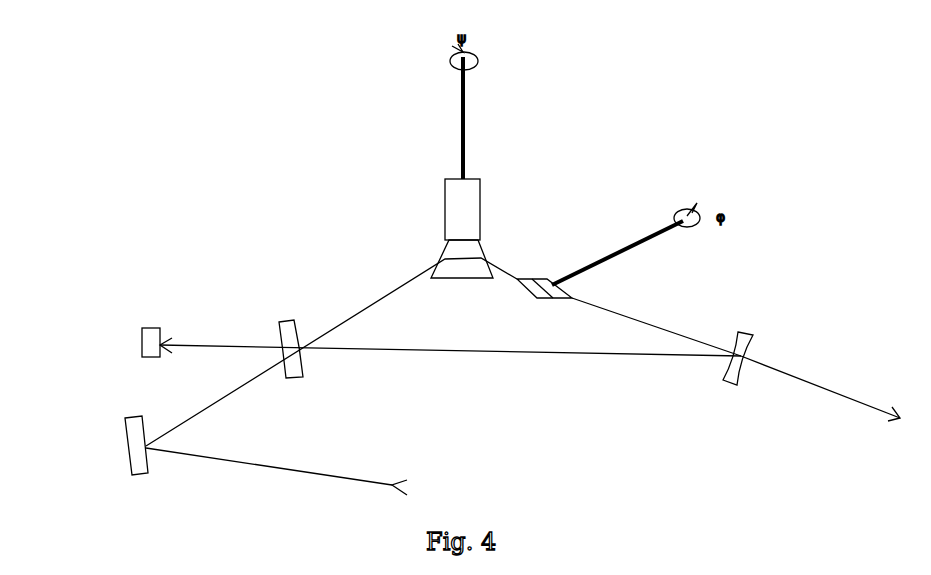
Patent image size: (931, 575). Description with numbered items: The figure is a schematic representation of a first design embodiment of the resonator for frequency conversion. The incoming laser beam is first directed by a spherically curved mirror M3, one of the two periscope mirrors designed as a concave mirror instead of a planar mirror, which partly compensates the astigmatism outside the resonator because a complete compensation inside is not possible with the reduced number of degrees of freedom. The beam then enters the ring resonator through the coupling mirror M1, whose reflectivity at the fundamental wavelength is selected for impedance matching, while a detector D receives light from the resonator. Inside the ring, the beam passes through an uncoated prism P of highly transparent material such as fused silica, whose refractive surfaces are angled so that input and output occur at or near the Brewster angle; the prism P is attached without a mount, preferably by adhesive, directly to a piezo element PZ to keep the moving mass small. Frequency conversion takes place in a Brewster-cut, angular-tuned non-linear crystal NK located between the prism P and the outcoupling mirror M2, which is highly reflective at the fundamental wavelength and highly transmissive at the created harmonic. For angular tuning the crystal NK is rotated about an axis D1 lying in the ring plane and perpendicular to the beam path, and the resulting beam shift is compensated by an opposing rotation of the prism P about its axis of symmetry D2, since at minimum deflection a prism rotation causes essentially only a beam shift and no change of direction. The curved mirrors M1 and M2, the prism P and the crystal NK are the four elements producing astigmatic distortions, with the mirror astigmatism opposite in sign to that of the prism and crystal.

The axis of symmetry D2 is at (455, 111).
The piezo element PZ is at (513, 170).
The prism P is at (385, 203).
The non-linear crystal NK is at (643, 197).
The axis D1 is at (626, 244).
The coupling mirror M1 is at (212, 281).
The detector D is at (107, 306).
The spherically curved mirror M3 is at (83, 418).
The outcoupling mirror M2 is at (779, 420).